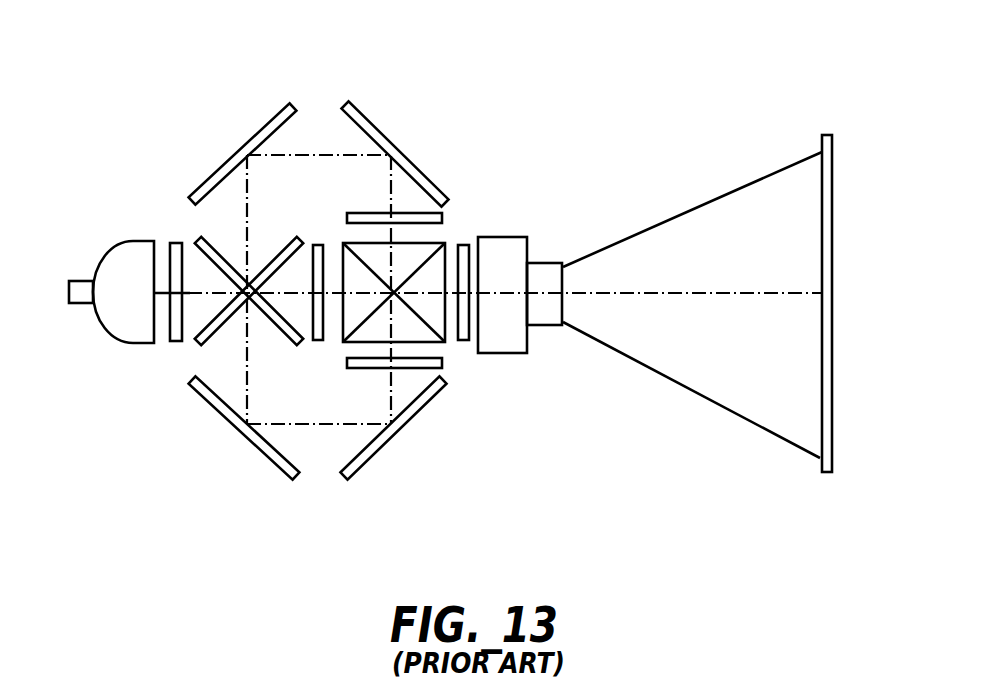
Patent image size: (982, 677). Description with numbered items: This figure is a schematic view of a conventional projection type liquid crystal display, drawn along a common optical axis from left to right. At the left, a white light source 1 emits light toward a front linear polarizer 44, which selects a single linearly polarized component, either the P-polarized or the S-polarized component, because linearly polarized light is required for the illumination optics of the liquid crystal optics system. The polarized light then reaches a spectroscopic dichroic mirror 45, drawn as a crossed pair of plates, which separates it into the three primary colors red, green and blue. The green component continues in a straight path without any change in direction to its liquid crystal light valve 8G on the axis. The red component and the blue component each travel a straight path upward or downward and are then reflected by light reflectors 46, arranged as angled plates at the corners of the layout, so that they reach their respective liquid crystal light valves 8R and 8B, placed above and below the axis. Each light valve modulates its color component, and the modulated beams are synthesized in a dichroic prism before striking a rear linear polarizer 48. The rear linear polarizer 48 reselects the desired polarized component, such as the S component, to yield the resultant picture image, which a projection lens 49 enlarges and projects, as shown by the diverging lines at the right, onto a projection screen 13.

The white light source 1 is at (132, 332).
The front linear polarizer 44 is at (178, 342).
The spectroscopic dichroic mirror 45 is at (200, 340).
The light reflectors 46 is at (247, 142).
The liquid crystal light valve 8G is at (315, 243).
The liquid crystal light valve 8R is at (372, 212).
The liquid crystal light valve 8B is at (355, 370).
The rear linear polarizer 48 is at (463, 342).
The projection lens 49 is at (503, 353).
The projection screen 13 is at (822, 468).